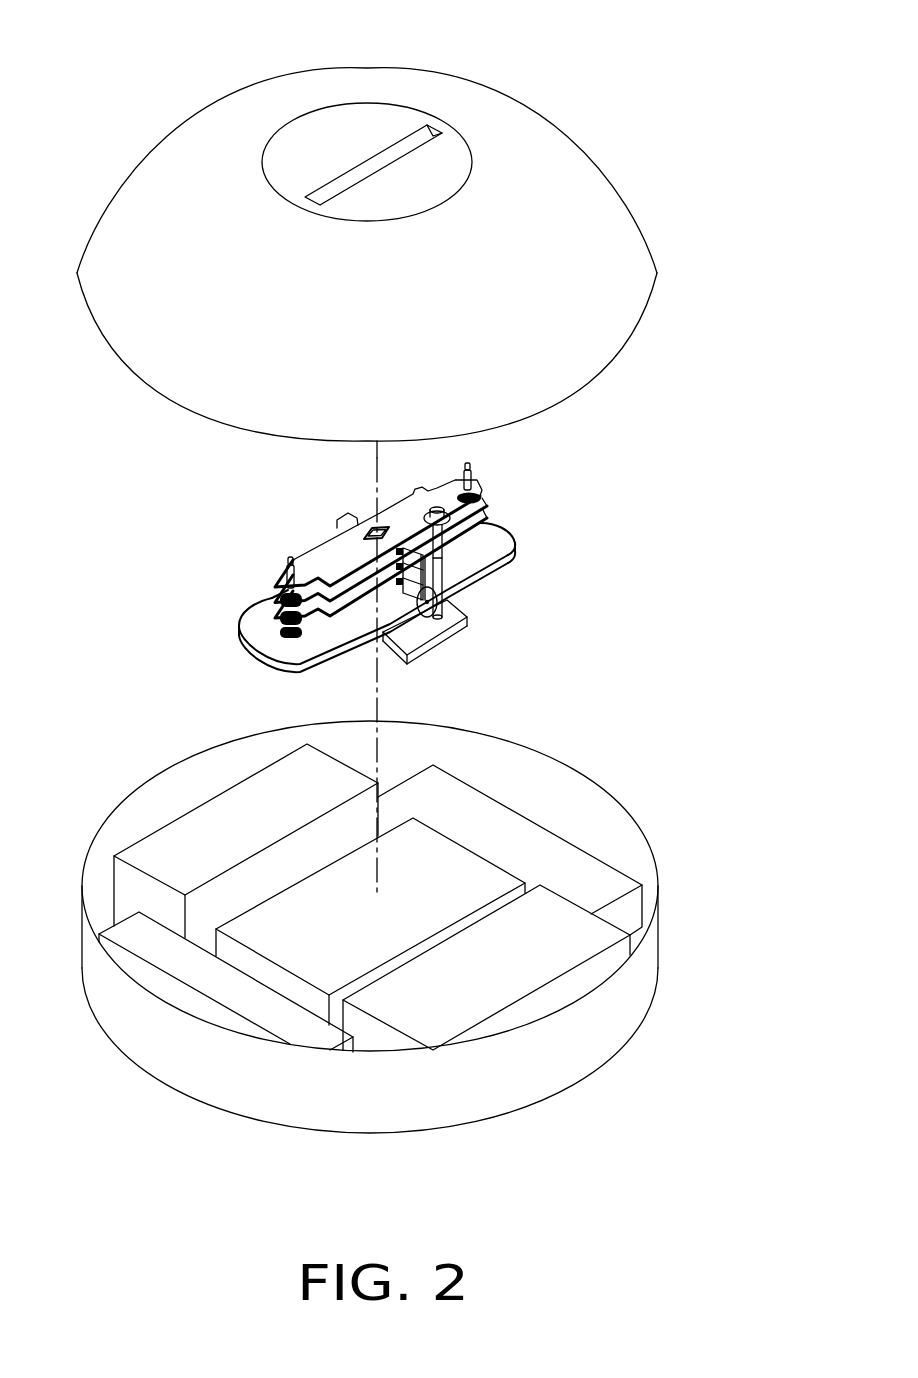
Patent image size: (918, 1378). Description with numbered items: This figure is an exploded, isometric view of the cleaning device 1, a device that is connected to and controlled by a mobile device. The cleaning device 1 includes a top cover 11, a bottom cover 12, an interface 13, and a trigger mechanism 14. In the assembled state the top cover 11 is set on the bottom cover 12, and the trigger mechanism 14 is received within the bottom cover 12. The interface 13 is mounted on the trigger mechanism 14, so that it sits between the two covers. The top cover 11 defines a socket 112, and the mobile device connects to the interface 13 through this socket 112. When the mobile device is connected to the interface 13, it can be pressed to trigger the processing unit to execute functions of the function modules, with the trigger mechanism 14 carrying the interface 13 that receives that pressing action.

The cleaning device 1 is at (157, 104).
The top cover 11 is at (507, 123).
The socket 112 is at (357, 182).
The bottom cover 12 is at (633, 1005).
The interface 13 is at (377, 527).
The trigger mechanism 14 is at (508, 510).